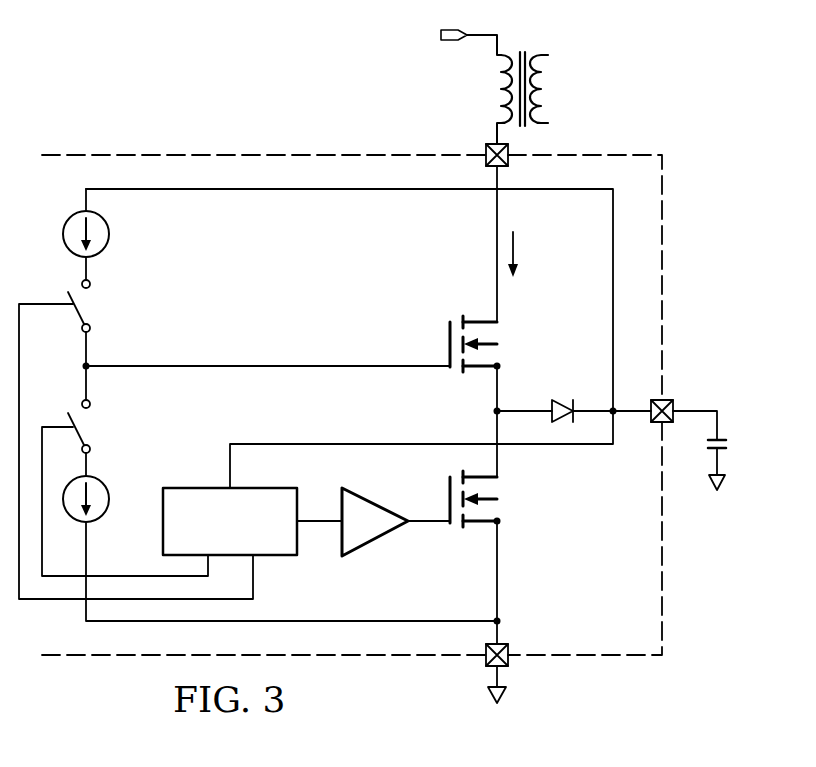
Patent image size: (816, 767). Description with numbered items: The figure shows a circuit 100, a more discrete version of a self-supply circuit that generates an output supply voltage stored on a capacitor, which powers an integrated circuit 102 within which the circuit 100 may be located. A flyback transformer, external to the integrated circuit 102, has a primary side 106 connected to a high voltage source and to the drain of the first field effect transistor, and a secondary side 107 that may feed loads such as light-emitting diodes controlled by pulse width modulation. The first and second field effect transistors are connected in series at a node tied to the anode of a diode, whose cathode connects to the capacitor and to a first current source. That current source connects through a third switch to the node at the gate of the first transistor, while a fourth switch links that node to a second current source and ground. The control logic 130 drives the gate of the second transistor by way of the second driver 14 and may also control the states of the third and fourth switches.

The circuit 100 is at (215, 86).
The integrated circuit 102 is at (664, 265).
The primary side 106 is at (505, 96).
The secondary side 107 is at (540, 83).
The control logic 130 is at (195, 487).
The second driver 14 is at (376, 503).